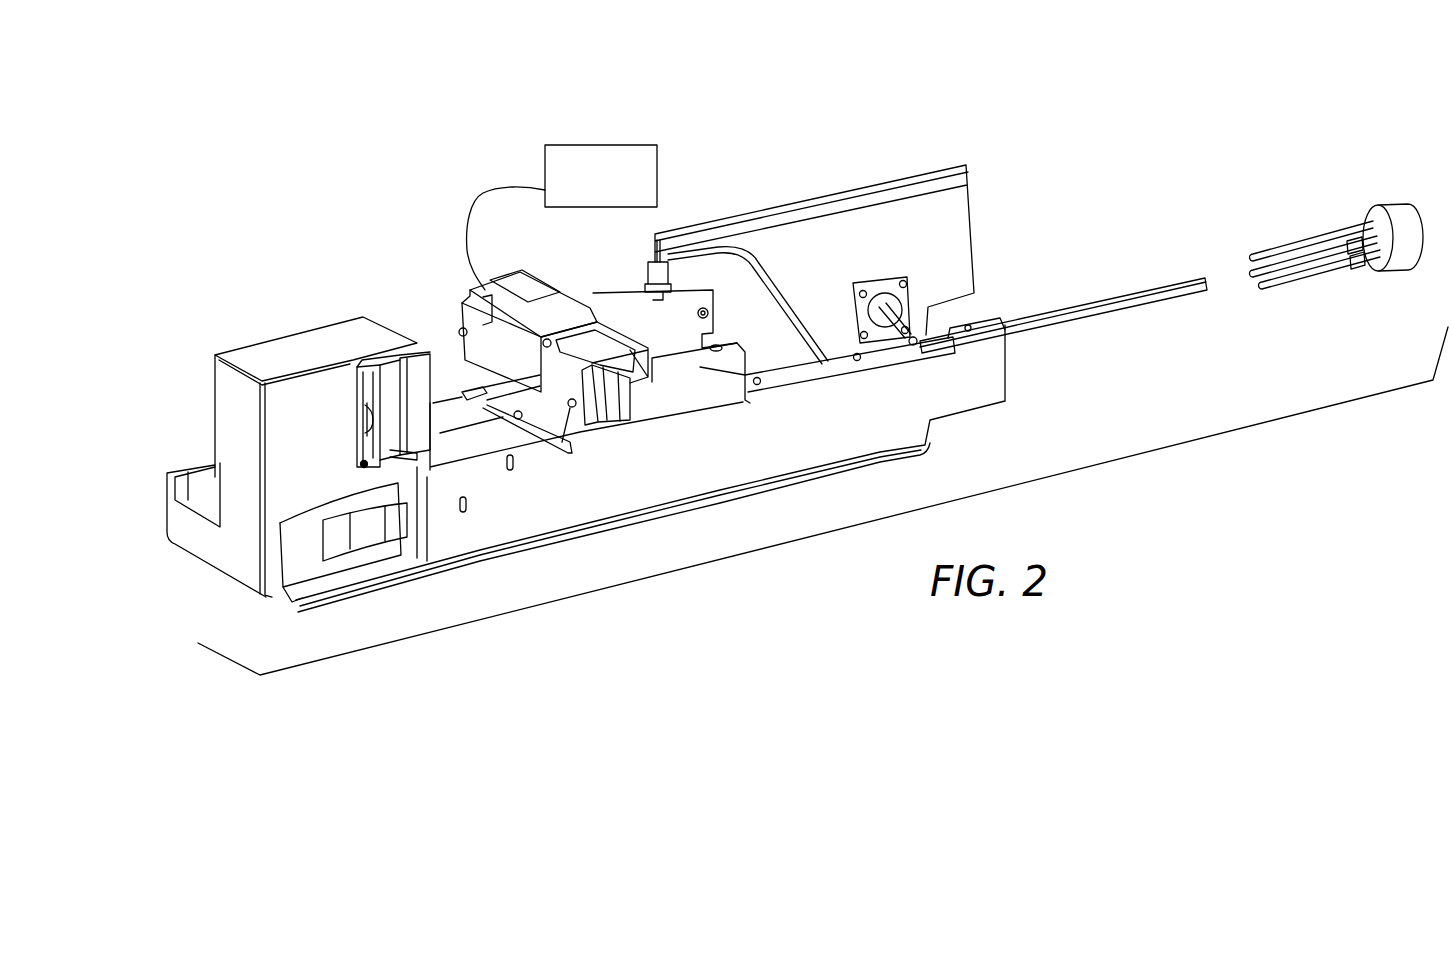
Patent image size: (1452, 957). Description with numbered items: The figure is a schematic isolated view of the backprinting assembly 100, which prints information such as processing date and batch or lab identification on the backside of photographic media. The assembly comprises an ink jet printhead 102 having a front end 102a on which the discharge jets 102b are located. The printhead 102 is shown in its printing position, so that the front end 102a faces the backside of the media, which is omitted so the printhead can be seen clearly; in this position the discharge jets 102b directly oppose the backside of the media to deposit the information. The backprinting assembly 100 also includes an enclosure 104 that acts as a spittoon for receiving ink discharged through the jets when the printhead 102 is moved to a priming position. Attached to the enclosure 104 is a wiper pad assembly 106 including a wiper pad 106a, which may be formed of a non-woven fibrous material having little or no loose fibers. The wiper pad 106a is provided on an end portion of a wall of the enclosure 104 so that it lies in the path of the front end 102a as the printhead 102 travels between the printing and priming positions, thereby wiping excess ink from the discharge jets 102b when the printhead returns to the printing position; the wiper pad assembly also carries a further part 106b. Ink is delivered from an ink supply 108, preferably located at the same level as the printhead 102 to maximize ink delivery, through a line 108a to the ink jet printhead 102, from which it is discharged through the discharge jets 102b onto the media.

The backprinting assembly 100 is at (320, 102).
The ink jet printhead 102 is at (540, 317).
The front end 102a is at (637, 403).
The discharge jets 102b is at (613, 408).
The enclosure 104 is at (238, 425).
The wiper pad assembly 106 is at (364, 372).
The wiper pad 106a is at (430, 467).
The bracket clip 106b is at (390, 408).
The ink supply 108 is at (622, 142).
The line 108a is at (473, 196).